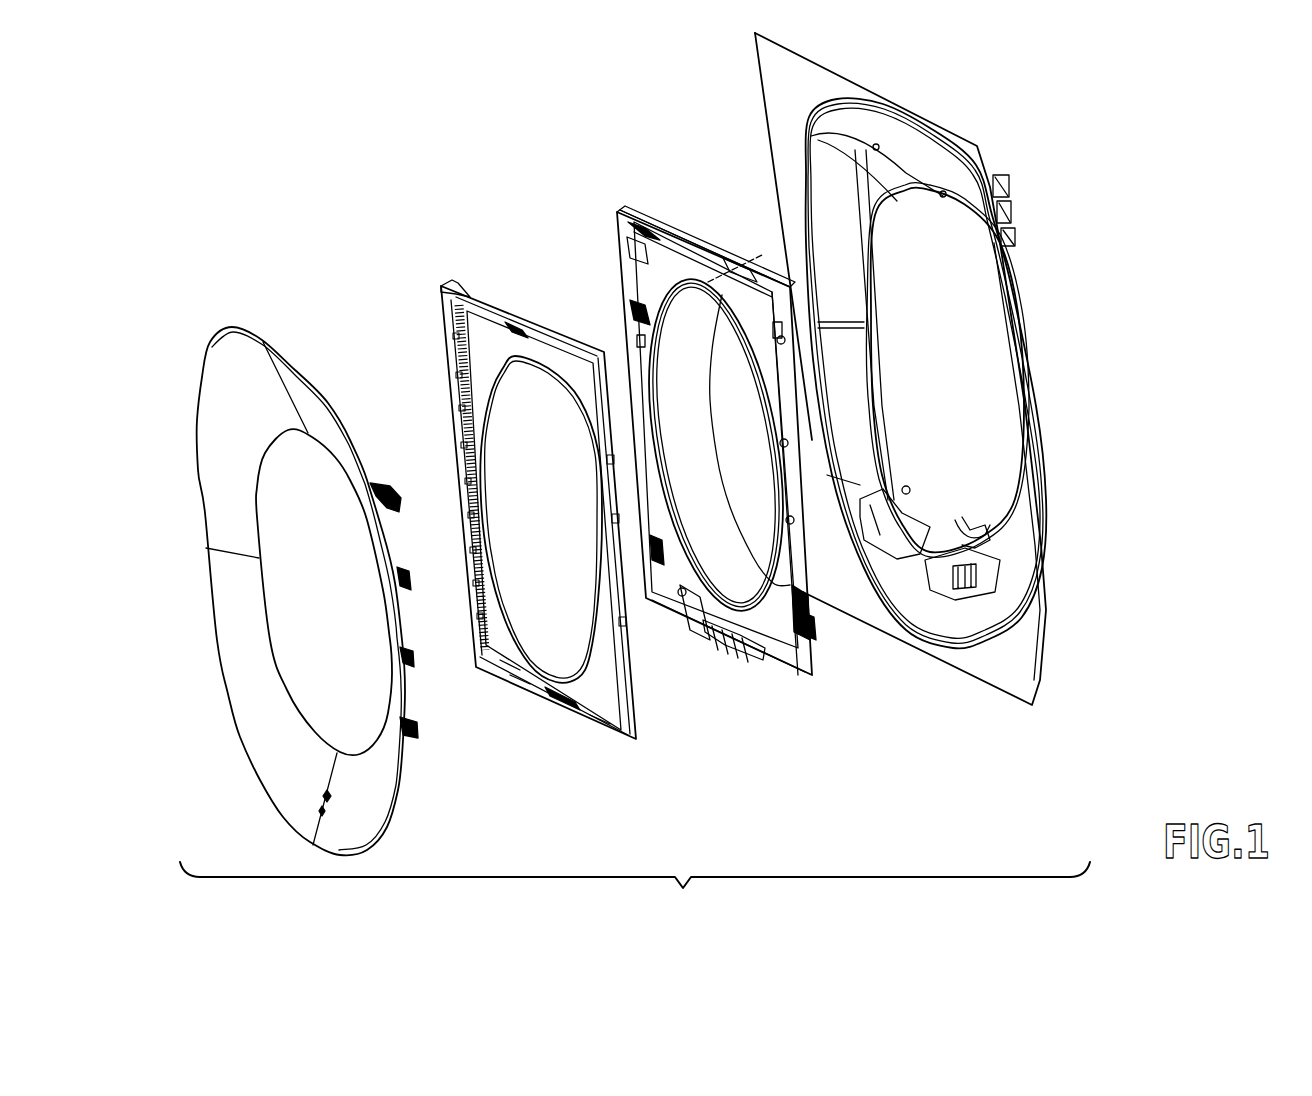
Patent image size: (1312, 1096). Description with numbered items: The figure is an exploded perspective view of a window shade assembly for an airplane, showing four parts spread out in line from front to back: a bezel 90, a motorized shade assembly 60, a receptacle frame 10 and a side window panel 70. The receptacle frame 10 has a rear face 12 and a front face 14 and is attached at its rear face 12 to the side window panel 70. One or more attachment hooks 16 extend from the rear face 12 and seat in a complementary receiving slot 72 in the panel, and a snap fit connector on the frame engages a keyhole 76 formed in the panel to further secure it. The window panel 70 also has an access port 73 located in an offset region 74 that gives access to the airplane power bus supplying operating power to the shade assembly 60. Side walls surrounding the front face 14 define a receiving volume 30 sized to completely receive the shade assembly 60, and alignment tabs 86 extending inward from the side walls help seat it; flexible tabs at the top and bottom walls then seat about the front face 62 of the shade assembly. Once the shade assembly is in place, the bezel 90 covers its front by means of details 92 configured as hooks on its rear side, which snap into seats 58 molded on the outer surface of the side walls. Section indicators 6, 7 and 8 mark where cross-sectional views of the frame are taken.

The section line 6- 6 is at (716, 282).
The section line 7- 7 is at (748, 650).
The section line 8- 8 is at (608, 245).
The receptacle frame 10 is at (724, 438).
The rear face 12 is at (705, 233).
The front face 14 is at (651, 291).
The attachment hooks 16 is at (680, 595).
The receiving volume 30 is at (719, 462).
The seats 58 is at (782, 442).
The motorized shade assembly 60 is at (580, 493).
The front face 62 is at (455, 296).
The side window panel 70 is at (900, 395).
The receiving slot 72 is at (909, 486).
The access port 73 is at (963, 582).
The offset region 74 is at (943, 565).
The keyhole 76 is at (970, 533).
The alignment tabs 86 is at (809, 632).
The bezel 90 is at (378, 790).
The details configured as hooks 92 is at (410, 728).